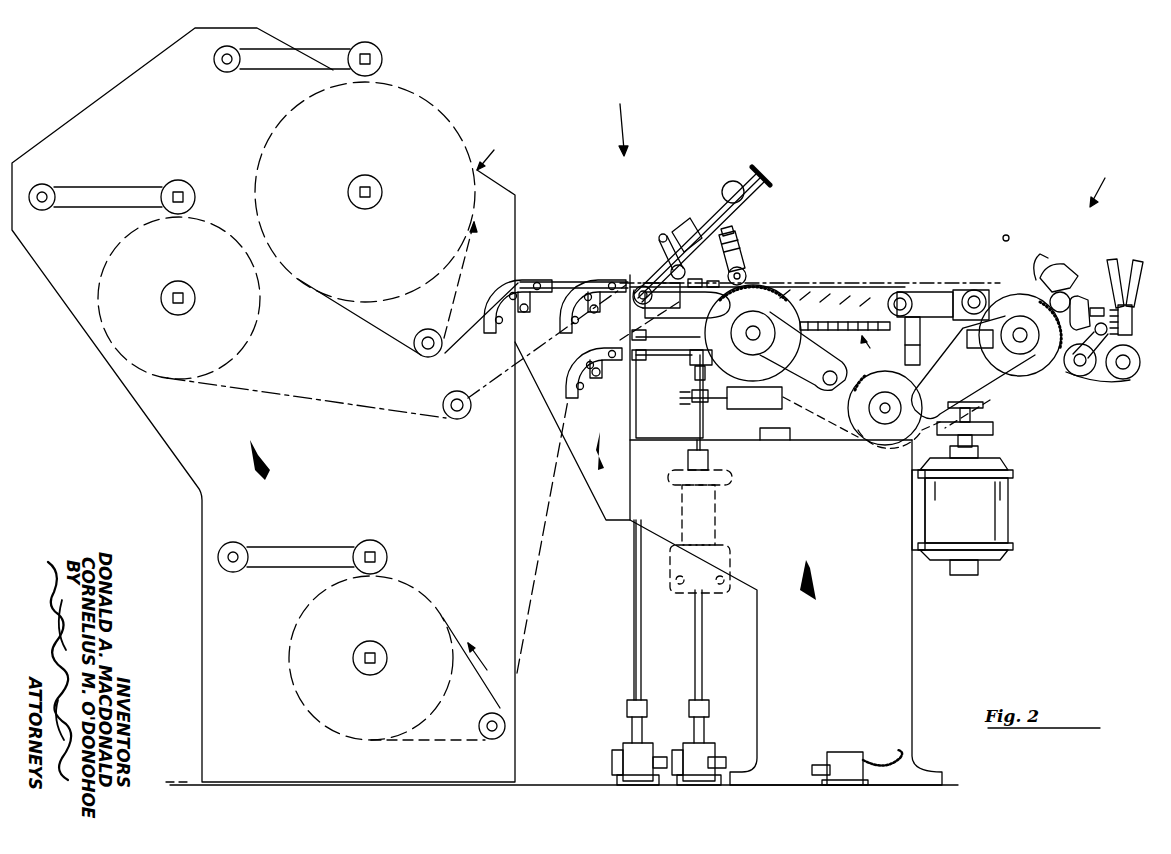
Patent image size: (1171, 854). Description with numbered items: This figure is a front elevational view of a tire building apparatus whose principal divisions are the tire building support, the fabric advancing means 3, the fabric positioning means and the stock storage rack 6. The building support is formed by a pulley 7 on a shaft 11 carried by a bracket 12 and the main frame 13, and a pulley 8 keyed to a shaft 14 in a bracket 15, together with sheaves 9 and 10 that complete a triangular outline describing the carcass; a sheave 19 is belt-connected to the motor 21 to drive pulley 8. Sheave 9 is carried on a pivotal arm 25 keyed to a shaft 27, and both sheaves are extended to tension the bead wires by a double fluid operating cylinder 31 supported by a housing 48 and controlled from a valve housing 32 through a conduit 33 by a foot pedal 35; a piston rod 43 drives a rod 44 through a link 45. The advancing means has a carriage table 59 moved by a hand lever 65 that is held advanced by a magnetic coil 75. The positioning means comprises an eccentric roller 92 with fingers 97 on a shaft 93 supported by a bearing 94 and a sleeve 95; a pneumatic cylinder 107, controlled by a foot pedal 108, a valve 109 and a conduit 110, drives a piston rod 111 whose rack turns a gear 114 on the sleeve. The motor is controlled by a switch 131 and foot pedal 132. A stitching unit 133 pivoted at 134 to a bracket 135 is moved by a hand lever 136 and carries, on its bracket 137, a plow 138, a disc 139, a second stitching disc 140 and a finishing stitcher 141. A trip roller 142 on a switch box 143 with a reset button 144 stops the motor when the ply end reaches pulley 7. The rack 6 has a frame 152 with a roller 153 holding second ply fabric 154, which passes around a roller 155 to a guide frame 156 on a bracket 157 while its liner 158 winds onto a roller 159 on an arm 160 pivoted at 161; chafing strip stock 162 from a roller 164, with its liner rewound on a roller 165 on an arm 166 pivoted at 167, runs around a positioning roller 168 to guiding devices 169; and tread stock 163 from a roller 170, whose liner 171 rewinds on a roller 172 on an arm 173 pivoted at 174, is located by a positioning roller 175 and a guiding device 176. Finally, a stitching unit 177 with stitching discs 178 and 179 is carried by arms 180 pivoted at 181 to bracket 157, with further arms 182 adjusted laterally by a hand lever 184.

The fabric advancing means 3 is at (845, 342).
The stock storage rack 6 is at (494, 146).
The pulley 7 is at (792, 292).
The pulley 8 is at (1010, 280).
The sheave 9 is at (880, 448).
The sheave 10 is at (896, 458).
The shaft 11 is at (750, 326).
The bracket 12 is at (766, 362).
The main frame 13 is at (906, 692).
The shaft 14 is at (1021, 330).
The bracket 15 is at (952, 388).
The sheave 19 is at (986, 426).
The motor 21 is at (998, 510).
The pivotal arm 25 is at (868, 440).
The shaft 27 is at (828, 386).
The double fluid operating cylinder 31 is at (688, 358).
The three-way foot actuated valve housing 32 is at (622, 746).
The conduit 33 is at (634, 650).
The foot pedal 35 is at (656, 756).
The piston rod 43 is at (694, 372).
The rod 44 is at (738, 410).
The link 45 is at (690, 400).
The housing 48 is at (776, 440).
The table 59 is at (884, 290).
The hand lever 65 is at (926, 300).
The magnetic coil 75 is at (922, 362).
The eccentric roller 92 is at (916, 284).
The shaft 93 is at (972, 284).
The bearing 94 is at (986, 296).
The sleeve 95 is at (640, 320).
The fingers 97 is at (850, 296).
The pneumatic cylinder 107 is at (714, 517).
The foot pedal 108 is at (728, 758).
The fluid operating valve 109 is at (712, 728).
The conduit 110 is at (700, 680).
The piston rod 111 is at (686, 450).
The gear 114 is at (708, 278).
The switch 131 is at (856, 752).
The foot pedal 132 is at (826, 764).
The stitching unit 133 is at (1110, 179).
The pivot 134 is at (1124, 380).
The bracket 135 is at (1072, 376).
The hand lever 136 is at (1148, 260).
The bracket 137 is at (1058, 268).
The plow 138 is at (1028, 262).
The disc 139 is at (1080, 290).
The second stitching disc 140 is at (1126, 300).
The finishing stitcher 141 is at (1100, 370).
The trip roller 142 is at (746, 272).
The electrical switch box 143 is at (744, 248).
The button 144 is at (734, 228).
The frame 152 is at (140, 388).
The roller 153 is at (355, 658).
The fabric 154 is at (536, 574).
The roller 155 is at (496, 740).
The guide frame 156 is at (566, 380).
The bracket 157 is at (606, 518).
The liner 158 is at (460, 638).
The roller 159 is at (374, 544).
The arm 160 is at (300, 553).
The pivot 161 is at (238, 552).
The chafing strip stock 162 is at (308, 396).
The tread stock 163 is at (462, 336).
The roller 164 is at (164, 292).
The roller 165 is at (182, 184).
The arm 166 is at (114, 192).
The pivot 167 is at (46, 190).
The positioning roller 168 is at (468, 420).
The guiding devices 169 is at (596, 282).
The roller 170 is at (362, 180).
The liner 171 is at (468, 240).
The roller 172 is at (380, 56).
The arm 173 is at (316, 52).
The pivot 174 is at (218, 60).
The positioning roller 175 is at (432, 358).
The guiding device 176 is at (532, 282).
The stitching unit 177 is at (616, 119).
The stitching disc 178 is at (730, 182).
The stitching disc 179 is at (768, 176).
The arms 180 is at (672, 266).
The pivot 181 is at (640, 286).
The arms 182 is at (694, 230).
The hand lever 184 is at (666, 234).